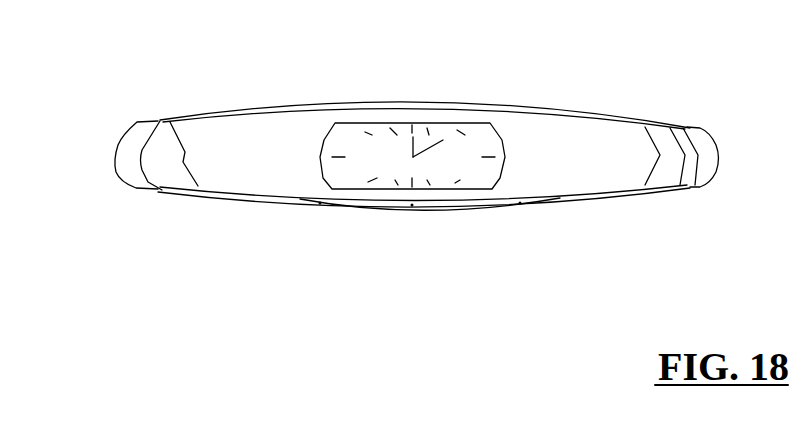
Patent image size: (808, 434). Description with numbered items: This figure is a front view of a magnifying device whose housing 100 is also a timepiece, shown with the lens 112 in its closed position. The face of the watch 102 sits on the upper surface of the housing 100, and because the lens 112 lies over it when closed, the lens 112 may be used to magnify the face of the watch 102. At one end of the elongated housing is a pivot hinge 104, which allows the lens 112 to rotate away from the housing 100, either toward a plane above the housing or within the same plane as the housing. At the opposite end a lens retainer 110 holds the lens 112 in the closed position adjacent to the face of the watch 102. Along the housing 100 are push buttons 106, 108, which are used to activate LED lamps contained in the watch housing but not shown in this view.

The housing 100 is at (608, 117).
The face of the watch 102 is at (437, 174).
The pivot hinge 104 is at (173, 165).
The push button 106 is at (358, 203).
The push button 108 is at (490, 202).
The lens retainer 110 is at (670, 148).
The lens 112 is at (265, 135).